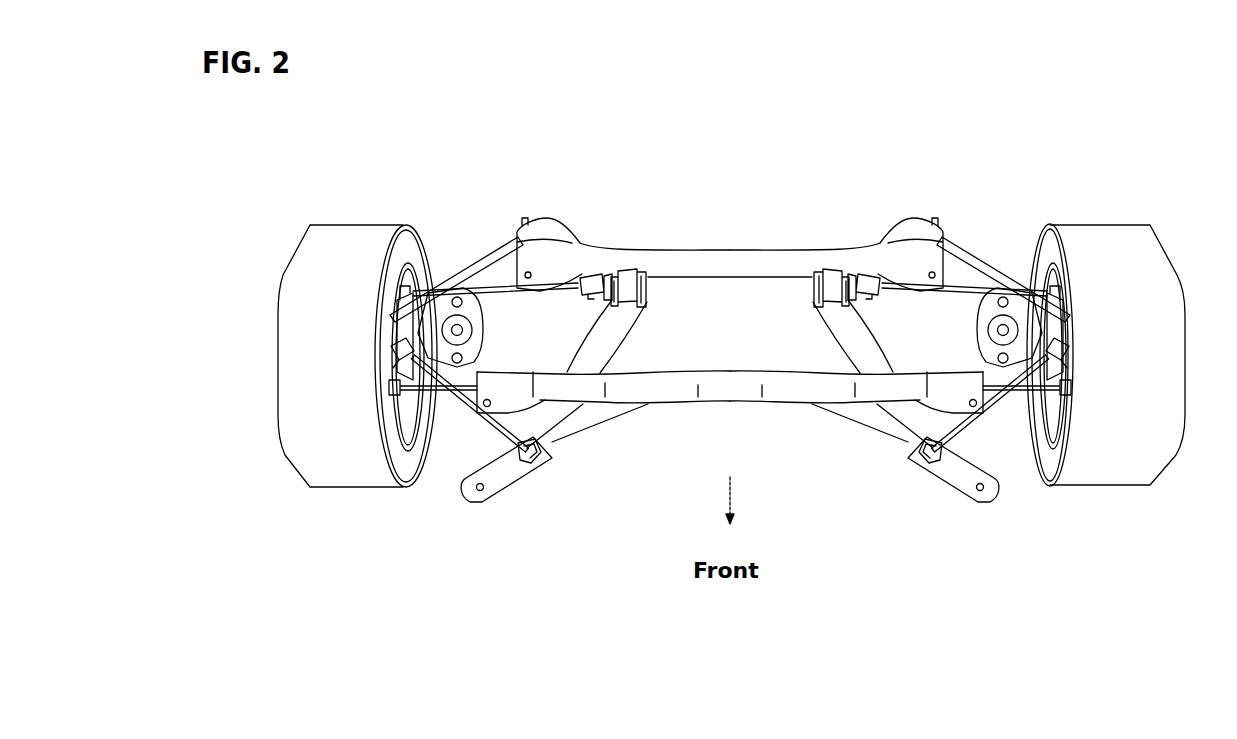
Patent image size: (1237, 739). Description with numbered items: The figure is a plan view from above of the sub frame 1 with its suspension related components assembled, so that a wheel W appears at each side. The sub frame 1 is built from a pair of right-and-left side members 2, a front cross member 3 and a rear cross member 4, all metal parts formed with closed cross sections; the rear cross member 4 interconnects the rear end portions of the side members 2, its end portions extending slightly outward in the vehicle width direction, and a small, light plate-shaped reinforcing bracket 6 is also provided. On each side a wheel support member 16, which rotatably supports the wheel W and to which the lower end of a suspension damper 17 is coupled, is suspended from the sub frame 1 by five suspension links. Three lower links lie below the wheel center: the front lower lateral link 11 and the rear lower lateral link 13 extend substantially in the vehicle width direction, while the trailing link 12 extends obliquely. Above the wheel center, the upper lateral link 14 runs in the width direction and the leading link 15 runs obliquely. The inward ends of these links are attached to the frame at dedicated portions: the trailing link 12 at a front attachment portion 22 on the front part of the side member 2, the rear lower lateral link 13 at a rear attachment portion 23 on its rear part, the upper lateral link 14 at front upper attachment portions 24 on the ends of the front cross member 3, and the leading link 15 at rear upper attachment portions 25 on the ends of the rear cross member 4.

The sub frame 1 is at (686, 148).
The side members 2 is at (498, 478).
The front cross member 3 is at (660, 396).
The rear cross member 4 is at (737, 257).
The reinforcing bracket 6 is at (583, 417).
The front lower lateral link 11 is at (395, 348).
The trailing link 12 is at (483, 424).
The rear lower lateral link 13 is at (500, 290).
The upper lateral link 14 is at (400, 435).
The leading link 15 is at (470, 262).
The wheel support member 16 is at (400, 335).
The suspension damper 17 is at (482, 323).
The front attachment portion 22 is at (537, 462).
The rear attachment portion 23 is at (604, 277).
The front upper attachment portion 24 is at (505, 384).
The rear upper attachment portion 25 is at (550, 228).
The wheel W is at (290, 418).